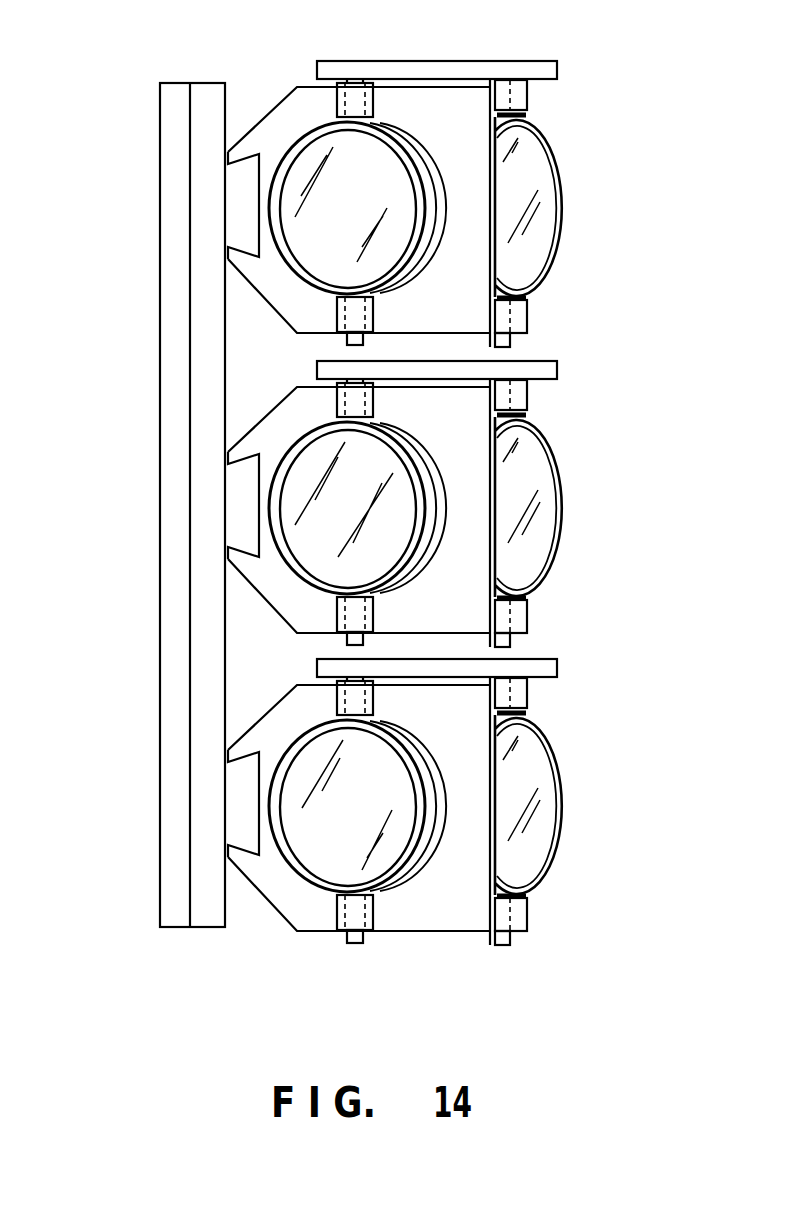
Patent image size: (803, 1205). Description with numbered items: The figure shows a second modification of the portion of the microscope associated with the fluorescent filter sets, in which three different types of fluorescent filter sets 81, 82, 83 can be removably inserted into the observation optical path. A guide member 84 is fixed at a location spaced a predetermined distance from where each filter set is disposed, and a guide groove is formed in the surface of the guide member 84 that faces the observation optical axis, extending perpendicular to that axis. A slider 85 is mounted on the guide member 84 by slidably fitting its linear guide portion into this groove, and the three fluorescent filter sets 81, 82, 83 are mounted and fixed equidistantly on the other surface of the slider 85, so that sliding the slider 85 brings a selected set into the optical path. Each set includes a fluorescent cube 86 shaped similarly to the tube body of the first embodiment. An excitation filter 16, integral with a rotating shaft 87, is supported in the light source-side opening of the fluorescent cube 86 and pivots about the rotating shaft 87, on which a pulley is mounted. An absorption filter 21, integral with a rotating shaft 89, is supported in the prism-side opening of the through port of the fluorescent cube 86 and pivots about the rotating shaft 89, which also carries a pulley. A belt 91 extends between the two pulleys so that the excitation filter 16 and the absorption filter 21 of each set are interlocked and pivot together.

The excitation filter 16 is at (533, 152).
The absorption filter 21 is at (307, 148).
The fluorescent filter set 81 is at (445, 184).
The fluorescent filter set 82 is at (565, 508).
The fluorescent filter set 83 is at (565, 812).
The guide member 84 is at (172, 492).
The slider 85 is at (218, 913).
The fluorescent cube 86 is at (309, 94).
The rotating shaft 87 is at (513, 340).
The rotating shaft 89 is at (347, 340).
The belt 91 is at (443, 62).